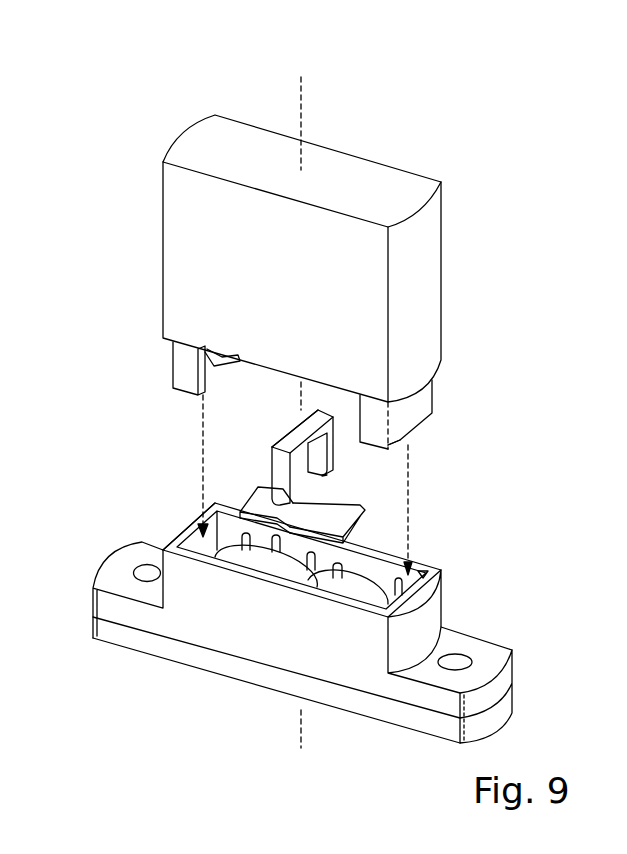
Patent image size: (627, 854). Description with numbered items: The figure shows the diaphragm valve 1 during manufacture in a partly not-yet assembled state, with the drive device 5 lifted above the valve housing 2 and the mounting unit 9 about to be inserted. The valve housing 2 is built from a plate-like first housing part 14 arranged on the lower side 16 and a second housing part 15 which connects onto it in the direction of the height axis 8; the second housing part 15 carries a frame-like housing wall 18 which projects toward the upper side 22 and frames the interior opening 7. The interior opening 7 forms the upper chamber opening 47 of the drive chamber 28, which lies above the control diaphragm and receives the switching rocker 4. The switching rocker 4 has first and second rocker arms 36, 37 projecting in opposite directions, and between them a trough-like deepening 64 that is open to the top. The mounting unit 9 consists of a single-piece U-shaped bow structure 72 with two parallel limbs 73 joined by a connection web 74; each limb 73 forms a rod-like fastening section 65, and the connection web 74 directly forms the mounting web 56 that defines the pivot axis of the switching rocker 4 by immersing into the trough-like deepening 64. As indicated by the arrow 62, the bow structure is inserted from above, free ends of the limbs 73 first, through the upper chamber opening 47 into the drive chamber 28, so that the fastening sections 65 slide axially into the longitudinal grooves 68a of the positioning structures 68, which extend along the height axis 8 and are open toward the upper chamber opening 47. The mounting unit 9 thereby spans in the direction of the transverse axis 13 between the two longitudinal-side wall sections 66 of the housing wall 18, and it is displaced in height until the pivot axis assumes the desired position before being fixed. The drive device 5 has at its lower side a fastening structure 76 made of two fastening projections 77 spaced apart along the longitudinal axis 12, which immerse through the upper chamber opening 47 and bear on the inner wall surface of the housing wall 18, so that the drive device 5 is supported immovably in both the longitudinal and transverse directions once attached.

The diaphragm valve 1 is at (530, 114).
The valve housing 2 is at (339, 645).
The switching rocker 4 is at (304, 493).
The drive device 5 is at (304, 337).
The interior opening 7 is at (313, 618).
The upper chamber opening 47 is at (313, 618).
The height axis 8 is at (303, 98).
The mounting unit 9 is at (310, 415).
The U-shaped bow structure 72 is at (310, 415).
The longitudinal axis 12 is at (517, 660).
The transverse axis 13 is at (268, 627).
The first housing part 14 is at (516, 696).
The second housing part 15 is at (490, 646).
The lower side 16 is at (338, 725).
The housing wall 18 is at (197, 582).
The upper side 22 is at (409, 172).
The drive chamber 28 is at (178, 541).
The first rocker arm 36 is at (257, 502).
The second rocker arm 37 is at (343, 517).
The mounting web 56 is at (313, 423).
The arrow 62 is at (298, 548).
The trough-like deepening 64 is at (293, 486).
The fastening section 65 is at (430, 457).
The limb 73 is at (324, 495).
The longitudinal-side wall section 66 is at (240, 575).
The positioning structure 68 is at (415, 565).
The longitudinal groove 68a is at (357, 556).
The connection web 74 is at (276, 447).
The fastening structure 76 is at (163, 347).
The fastening projection 77 is at (190, 380).